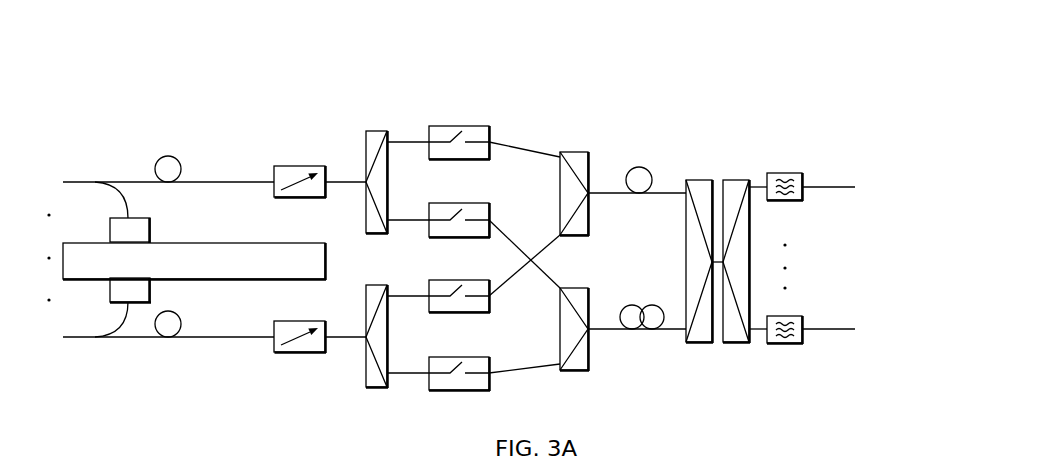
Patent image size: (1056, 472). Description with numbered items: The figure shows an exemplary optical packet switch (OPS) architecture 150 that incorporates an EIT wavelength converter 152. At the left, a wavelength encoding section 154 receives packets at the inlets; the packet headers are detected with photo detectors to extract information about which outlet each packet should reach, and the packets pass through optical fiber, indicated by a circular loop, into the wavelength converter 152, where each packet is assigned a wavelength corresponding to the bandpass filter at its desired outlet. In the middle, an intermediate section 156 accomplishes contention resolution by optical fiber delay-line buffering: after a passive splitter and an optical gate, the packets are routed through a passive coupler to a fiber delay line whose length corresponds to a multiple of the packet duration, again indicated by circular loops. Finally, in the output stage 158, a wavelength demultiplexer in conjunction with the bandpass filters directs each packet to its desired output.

The OPS architecture 150 is at (936, 96).
The EIT wavelength converter 152 is at (291, 353).
The wavelength encoding section 154 is at (358, 123).
The intermediate section 156 is at (677, 123).
The output stage 158 is at (682, 123).